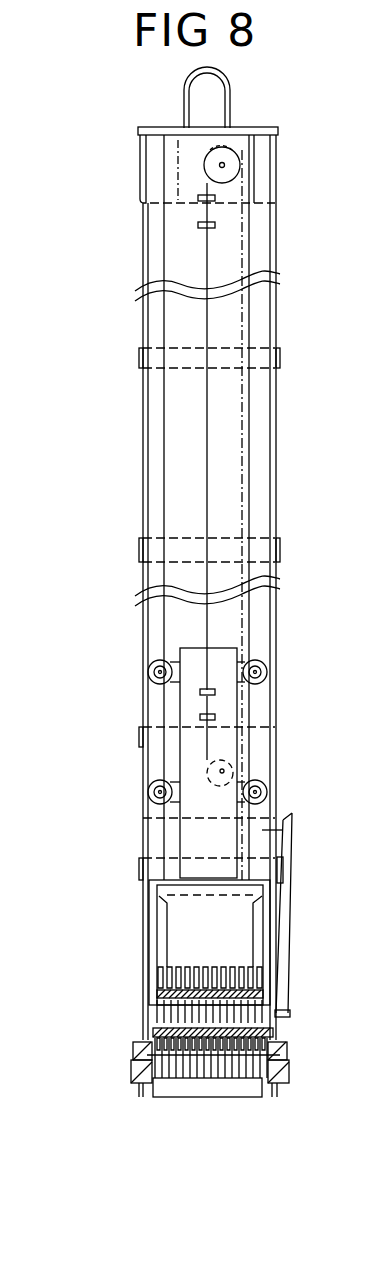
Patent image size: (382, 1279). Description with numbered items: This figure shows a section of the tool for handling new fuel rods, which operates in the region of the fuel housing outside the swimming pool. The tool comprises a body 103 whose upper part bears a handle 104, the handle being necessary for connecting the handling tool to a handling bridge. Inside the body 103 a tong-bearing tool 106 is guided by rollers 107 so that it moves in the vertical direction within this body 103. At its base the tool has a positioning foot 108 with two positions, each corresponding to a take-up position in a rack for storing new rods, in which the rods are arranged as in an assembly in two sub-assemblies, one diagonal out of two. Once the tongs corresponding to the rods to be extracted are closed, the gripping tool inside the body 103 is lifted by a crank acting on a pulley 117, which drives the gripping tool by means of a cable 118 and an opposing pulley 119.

The body 103 is at (145, 315).
The handle 104 is at (188, 72).
The tong-bearing tool 106 is at (193, 702).
The rollers 107 is at (160, 658).
The positioning foot 108 is at (137, 1052).
The pulley 117 is at (170, 155).
The cable 118 is at (242, 393).
The opposing pulley 119 is at (222, 771).